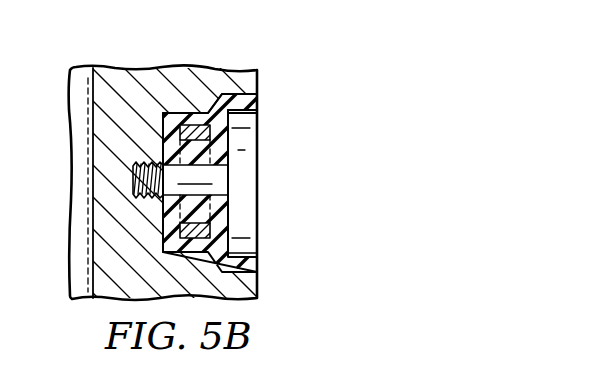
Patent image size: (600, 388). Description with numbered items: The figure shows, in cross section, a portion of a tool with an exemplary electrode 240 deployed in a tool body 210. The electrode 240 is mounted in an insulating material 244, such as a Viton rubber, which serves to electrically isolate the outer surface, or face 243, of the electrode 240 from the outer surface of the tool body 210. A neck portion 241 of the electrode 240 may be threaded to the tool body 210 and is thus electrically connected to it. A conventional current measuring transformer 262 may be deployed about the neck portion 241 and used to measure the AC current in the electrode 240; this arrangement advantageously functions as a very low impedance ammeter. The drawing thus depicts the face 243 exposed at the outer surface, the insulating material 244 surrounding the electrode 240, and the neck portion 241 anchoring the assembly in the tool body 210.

The tool body 210 is at (137, 67).
The electrode 240 is at (300, 188).
The neck portion 241 is at (134, 177).
The face 243 is at (258, 157).
The insulating material 244 is at (258, 101).
The current measuring transformer 262 is at (232, 212).